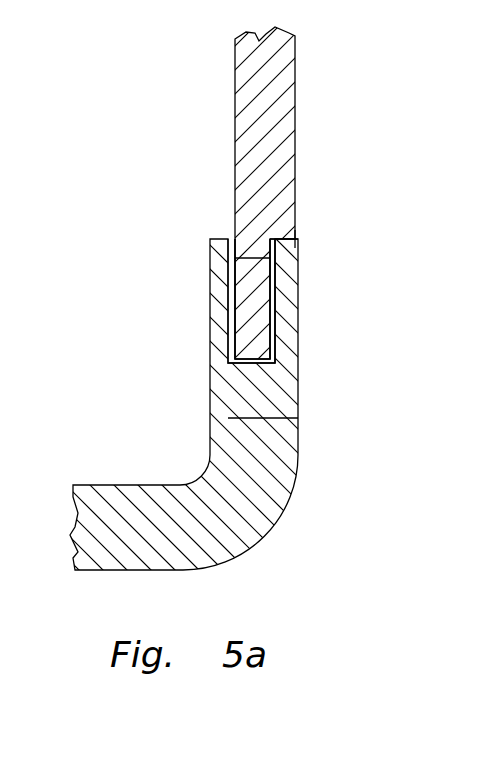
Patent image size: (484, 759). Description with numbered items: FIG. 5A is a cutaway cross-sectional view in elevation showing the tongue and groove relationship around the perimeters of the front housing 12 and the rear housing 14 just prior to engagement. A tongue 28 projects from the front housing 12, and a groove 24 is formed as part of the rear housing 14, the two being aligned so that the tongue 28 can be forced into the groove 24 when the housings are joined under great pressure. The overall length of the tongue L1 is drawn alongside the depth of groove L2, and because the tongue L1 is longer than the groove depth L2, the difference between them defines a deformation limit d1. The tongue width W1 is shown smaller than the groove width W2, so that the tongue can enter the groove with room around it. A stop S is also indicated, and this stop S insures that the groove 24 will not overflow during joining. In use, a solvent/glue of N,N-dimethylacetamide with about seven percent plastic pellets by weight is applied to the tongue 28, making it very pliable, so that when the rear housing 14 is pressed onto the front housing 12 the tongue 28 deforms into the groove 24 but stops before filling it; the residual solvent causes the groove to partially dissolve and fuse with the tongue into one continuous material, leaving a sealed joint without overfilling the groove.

The front housing 12 is at (296, 100).
The rear housing 14 is at (208, 425).
The groove 24 is at (293, 362).
The tongue 28 is at (245, 302).
The stop S is at (292, 232).
The deformation limit d1 is at (300, 237).
The tongue width W1 is at (255, 258).
The groove width W2 is at (278, 418).
The overall length of the tongue L1 is at (347, 298).
The depth of groove L2 is at (290, 325).